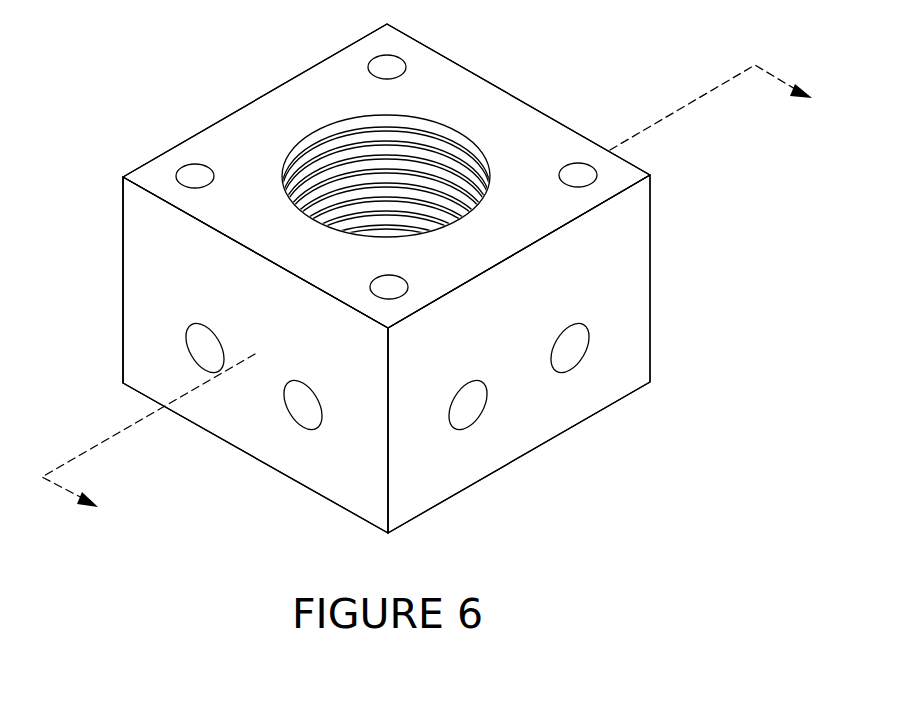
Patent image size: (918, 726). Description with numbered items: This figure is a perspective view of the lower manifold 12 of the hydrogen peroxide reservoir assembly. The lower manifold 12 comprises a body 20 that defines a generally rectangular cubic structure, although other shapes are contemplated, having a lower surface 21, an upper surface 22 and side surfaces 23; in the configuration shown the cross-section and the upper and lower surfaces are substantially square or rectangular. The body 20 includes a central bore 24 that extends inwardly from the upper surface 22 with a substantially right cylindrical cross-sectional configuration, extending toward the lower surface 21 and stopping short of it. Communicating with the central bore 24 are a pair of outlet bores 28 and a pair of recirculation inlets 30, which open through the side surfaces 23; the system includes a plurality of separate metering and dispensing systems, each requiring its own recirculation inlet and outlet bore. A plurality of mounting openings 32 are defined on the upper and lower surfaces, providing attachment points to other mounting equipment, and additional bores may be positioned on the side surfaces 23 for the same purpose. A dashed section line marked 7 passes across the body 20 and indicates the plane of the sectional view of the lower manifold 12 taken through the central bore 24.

The lower manifold 12 is at (560, 82).
The body 20 is at (122, 235).
The lower surface 21 is at (528, 455).
The upper surface 22 is at (328, 80).
The side surfaces 23 is at (128, 281).
The central bore 24 is at (345, 157).
The outlet bores 28 is at (217, 335).
The recirculation inlets 30 is at (462, 387).
The mounting openings 32 is at (190, 172).
The section line 7- 7 is at (437, 300).